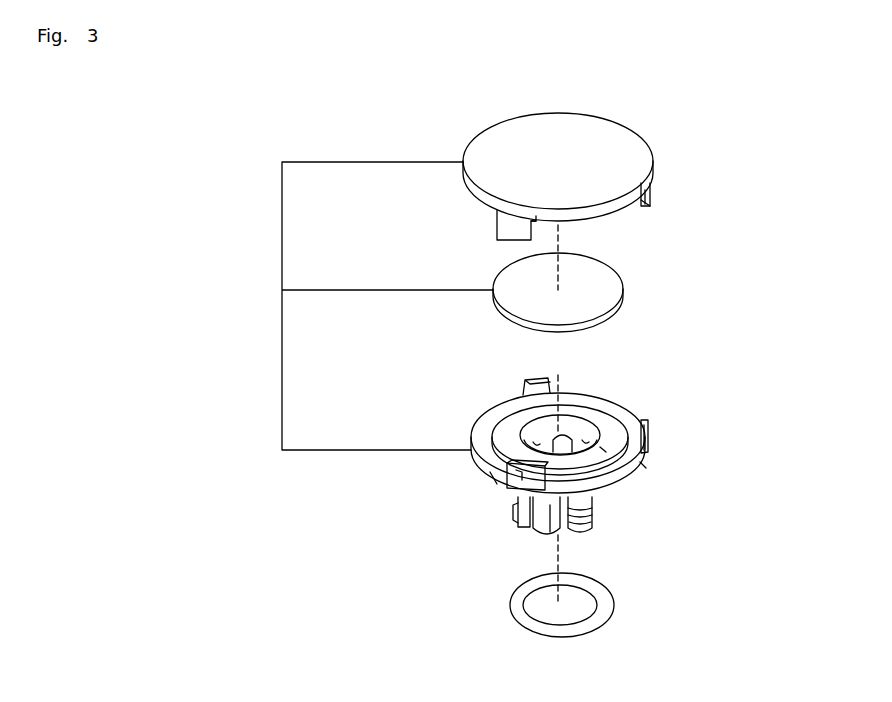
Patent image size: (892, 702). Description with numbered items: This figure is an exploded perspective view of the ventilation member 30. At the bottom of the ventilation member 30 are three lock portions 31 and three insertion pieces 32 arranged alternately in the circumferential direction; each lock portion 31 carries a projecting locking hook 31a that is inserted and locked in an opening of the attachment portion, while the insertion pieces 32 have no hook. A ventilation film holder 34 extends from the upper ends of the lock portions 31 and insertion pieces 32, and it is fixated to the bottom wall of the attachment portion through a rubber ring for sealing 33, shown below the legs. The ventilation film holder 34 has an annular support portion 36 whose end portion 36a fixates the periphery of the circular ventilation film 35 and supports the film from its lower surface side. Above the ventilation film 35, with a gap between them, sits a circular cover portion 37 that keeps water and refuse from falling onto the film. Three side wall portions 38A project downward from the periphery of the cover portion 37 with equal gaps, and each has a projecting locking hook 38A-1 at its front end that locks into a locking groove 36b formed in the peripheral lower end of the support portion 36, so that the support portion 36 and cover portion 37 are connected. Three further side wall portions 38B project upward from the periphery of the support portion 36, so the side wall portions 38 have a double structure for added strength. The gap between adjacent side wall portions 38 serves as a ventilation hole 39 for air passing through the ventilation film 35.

The ventilation member 30 is at (330, 100).
The lock portion 31 is at (561, 542).
The locking hook 31a is at (592, 515).
The insertion piece 32 is at (558, 533).
The rubber ring for sealing 33 is at (515, 607).
The ventilation film holder 34 is at (282, 308).
The ventilation film 35 is at (605, 290).
The support portion 36 is at (628, 413).
The end portion 36a is at (603, 448).
The locking groove 36b is at (645, 465).
The cover portion 37 is at (633, 150).
The side wall portions 38 is at (653, 187).
The side wall portion 38A is at (505, 226).
The locking hook 38A-1 is at (645, 207).
The side wall portion 38B is at (516, 468).
The ventilation hole 39 is at (492, 216).